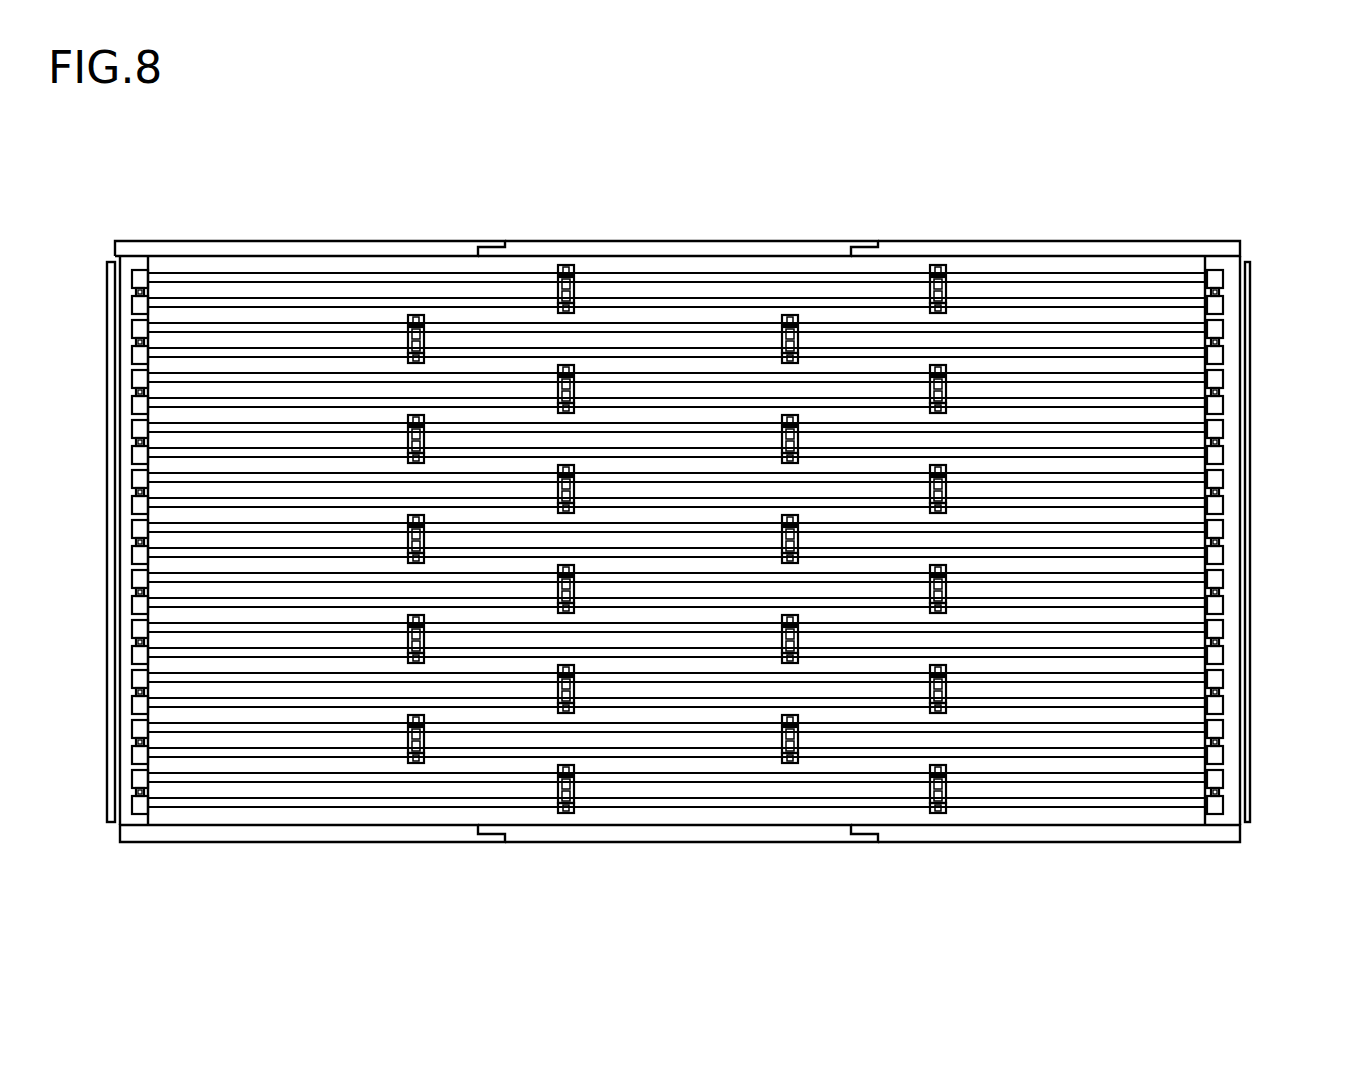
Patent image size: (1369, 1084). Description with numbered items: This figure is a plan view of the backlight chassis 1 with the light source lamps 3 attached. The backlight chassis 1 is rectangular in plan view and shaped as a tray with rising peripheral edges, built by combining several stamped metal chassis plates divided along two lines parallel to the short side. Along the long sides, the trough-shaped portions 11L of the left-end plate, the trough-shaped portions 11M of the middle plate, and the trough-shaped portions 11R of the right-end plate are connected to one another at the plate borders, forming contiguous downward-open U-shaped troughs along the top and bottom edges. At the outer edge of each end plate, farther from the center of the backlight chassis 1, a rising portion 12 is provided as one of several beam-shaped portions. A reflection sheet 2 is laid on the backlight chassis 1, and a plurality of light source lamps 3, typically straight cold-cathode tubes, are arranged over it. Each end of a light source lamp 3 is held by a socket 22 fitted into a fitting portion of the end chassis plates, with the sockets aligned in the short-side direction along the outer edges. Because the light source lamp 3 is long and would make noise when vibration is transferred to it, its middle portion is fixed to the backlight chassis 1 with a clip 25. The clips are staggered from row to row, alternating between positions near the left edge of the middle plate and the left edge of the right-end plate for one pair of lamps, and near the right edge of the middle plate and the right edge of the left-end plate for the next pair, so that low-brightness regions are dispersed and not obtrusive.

The backlight chassis 1 is at (112, 218).
The reflection sheet 2 is at (301, 822).
The light source lamp 3 is at (416, 275).
The trough-shaped portion 11L is at (300, 250).
The trough-shaped portion 11M is at (676, 250).
The trough-shaped portion 11R is at (1050, 250).
The rising portion 12 is at (1252, 390).
The socket 22 is at (1215, 272).
The clip 25 is at (940, 812).